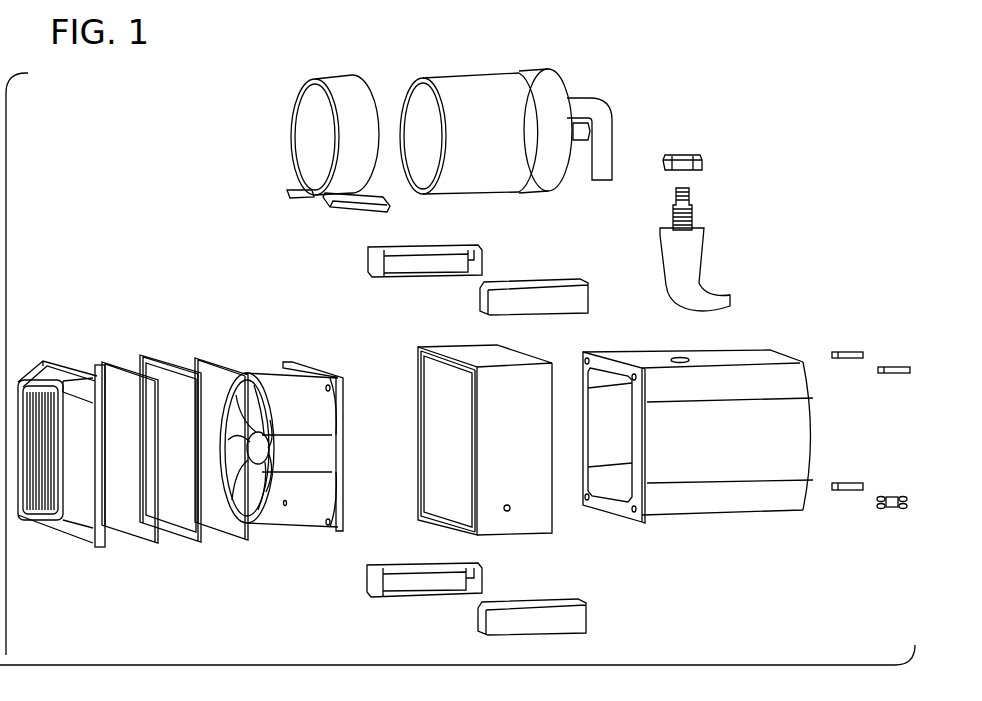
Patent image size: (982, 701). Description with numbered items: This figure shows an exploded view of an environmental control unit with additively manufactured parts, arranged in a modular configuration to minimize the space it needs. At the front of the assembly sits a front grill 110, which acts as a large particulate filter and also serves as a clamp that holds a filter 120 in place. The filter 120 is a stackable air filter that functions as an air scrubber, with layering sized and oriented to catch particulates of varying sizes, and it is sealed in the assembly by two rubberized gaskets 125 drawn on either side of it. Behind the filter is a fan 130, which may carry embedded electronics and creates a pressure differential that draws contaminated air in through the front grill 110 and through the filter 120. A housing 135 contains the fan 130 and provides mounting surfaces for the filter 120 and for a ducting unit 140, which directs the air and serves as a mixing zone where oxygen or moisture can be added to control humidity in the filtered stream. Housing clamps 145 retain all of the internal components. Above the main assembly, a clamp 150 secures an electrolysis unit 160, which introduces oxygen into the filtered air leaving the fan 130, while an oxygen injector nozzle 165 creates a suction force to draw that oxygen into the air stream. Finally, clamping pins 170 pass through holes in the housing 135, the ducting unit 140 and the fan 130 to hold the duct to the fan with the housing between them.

The front grill 110 is at (48, 362).
The filter 120 is at (165, 355).
The rubberized gasket 125 is at (133, 545).
The fan 130 is at (268, 372).
The housing 135 is at (420, 418).
The ducting unit 140 is at (722, 512).
The housing clamps 145 is at (422, 278).
The clamp 150 is at (338, 76).
The electrolysis unit 160 is at (473, 75).
The oxygen injector nozzle 165 is at (695, 212).
The clamping pins 170 is at (893, 374).